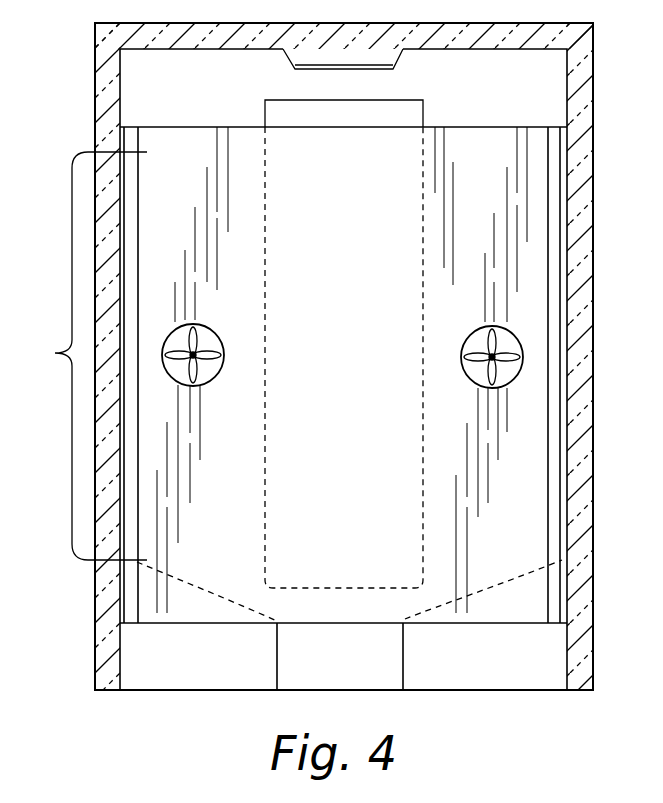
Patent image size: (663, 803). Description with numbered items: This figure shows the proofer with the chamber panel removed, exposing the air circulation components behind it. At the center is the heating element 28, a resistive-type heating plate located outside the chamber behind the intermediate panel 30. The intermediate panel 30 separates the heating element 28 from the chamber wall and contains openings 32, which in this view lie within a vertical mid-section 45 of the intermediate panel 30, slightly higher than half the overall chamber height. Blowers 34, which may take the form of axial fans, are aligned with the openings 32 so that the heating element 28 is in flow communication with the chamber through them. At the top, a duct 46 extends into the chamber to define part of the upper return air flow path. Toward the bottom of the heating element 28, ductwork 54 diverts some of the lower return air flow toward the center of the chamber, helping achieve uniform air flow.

The heating element 28 is at (423, 225).
The intermediate panel 30 is at (517, 196).
The openings 32 is at (222, 341).
The blowers 34 is at (200, 368).
The vertical mid-section 45 is at (84, 356).
The duct 46 is at (285, 56).
The ductwork 54 is at (220, 593).